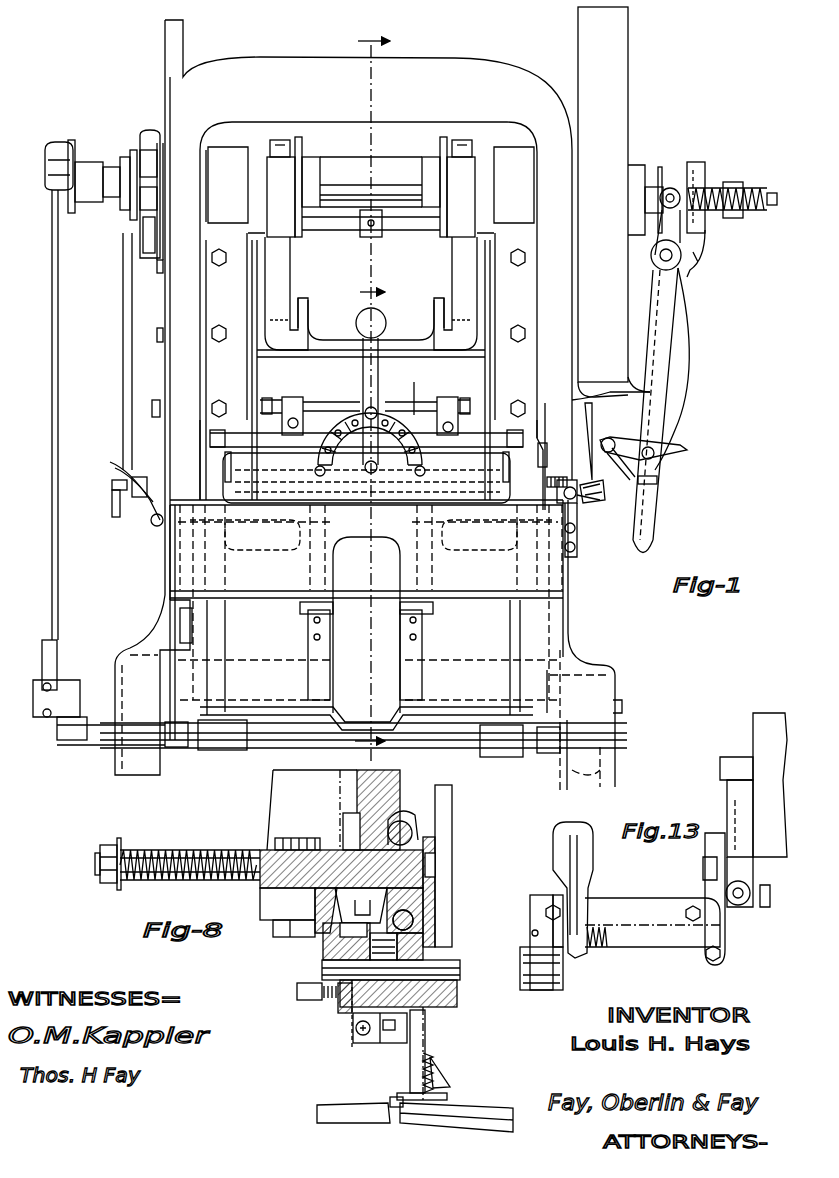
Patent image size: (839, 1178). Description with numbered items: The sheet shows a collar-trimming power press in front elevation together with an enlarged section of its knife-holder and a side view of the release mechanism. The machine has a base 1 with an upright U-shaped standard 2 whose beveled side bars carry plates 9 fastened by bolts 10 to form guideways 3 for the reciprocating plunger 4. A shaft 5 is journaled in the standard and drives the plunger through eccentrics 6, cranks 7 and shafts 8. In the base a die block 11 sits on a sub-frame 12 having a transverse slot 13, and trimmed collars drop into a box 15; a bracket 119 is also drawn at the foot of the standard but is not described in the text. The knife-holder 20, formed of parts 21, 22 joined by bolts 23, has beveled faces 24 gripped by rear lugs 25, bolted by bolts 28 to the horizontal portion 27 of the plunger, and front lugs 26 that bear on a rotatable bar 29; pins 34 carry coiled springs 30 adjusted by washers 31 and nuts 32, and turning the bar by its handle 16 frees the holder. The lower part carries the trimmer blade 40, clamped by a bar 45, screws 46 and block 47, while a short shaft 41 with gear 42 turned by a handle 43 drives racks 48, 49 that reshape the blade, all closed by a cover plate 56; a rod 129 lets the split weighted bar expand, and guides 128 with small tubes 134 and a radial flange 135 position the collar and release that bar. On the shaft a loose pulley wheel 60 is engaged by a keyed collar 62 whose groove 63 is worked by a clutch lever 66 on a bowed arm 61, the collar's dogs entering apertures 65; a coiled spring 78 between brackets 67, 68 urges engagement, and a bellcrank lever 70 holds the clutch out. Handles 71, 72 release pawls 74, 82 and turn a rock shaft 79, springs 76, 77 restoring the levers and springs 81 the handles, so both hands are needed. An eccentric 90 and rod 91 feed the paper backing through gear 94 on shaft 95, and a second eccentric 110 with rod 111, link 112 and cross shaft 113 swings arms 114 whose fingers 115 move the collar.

In FIG. 1, the base 1 is at (577, 656).
In FIG. 1, the upright U-shaped standard 2 is at (336, 73).
In FIG. 1, the guideways 3 is at (247, 372).
In FIG. 1, the plunger 4 is at (356, 393).
In FIG. 8, the plunger 4 is at (372, 788).
In FIG. 1, the shaft 5 is at (103, 165).
In FIG. 1, the eccentrics 6 is at (297, 148).
In FIG. 1, the cranks 7 is at (277, 272).
In FIG. 1, the shafts 8 is at (305, 313).
In FIG. 1, the plates 9 is at (468, 393).
In FIG. 1, the bolts 10 is at (214, 405).
In FIG. 8, the die block 11 is at (334, 1108).
In FIG. 8, the sub-frame 12 is at (470, 1115).
In FIG. 8, the slot 13 is at (392, 1100).
In FIG. 1, the box 15 is at (273, 598).
In FIG. 1, the handle 16 is at (415, 382).
In FIG. 8, the knife-holder 20 is at (335, 935).
In FIG. 8, the upper part of knife-holder 21 is at (340, 945).
In FIG. 8, the lower part of knife-holder 22 is at (311, 989).
In FIG. 8, the bolts 23 is at (361, 905).
In FIG. 8, the beveled faces 24 is at (320, 905).
In FIG. 8, the rear retaining lugs 25 is at (260, 898).
In FIG. 1, the front retaining lugs 26 is at (295, 402).
In FIG. 8, the horizontal portion of plunger 27 is at (300, 860).
In FIG. 8, the bolts 28 is at (325, 930).
In FIG. 1, the rotatably mounted bar 29 is at (389, 400).
In FIG. 8, the rotatably mounted bar 29 is at (410, 828).
In FIG. 8, the coiled springs 30 is at (183, 855).
In FIG. 8, the washers 31 is at (121, 842).
In FIG. 8, the nuts 32 is at (108, 845).
In FIG. 8, the pins 34 is at (95, 863).
In FIG. 1, the trimmer blade 40 is at (585, 470).
In FIG. 8, the trimmer blade 40 is at (352, 1030).
In FIG. 8, the short shaft 41 is at (455, 985).
In FIG. 8, the gear 42 is at (432, 947).
In FIG. 8, the handle 43 is at (452, 872).
In FIG. 8, the bar 45 is at (338, 1000).
In FIG. 8, the screws 46 is at (300, 996).
In FIG. 8, the block 47 is at (410, 1015).
In FIG. 8, the rack 48 is at (420, 928).
In FIG. 8, the rack 49 is at (400, 1010).
In FIG. 8, the cover plate 56 is at (392, 1030).
In FIG. 1, the pulley wheel 60 is at (623, 91).
In FIG. 1, the bowed arm 61 is at (683, 366).
In FIG. 1, the collar 62 is at (680, 160).
In FIG. 1, the circumferential groove 63 is at (666, 160).
In FIG. 1, the apertures 65 is at (676, 192).
In FIG. 1, the clutch lever 66 is at (663, 327).
In FIG. 1, the bracket 67 is at (695, 188).
In FIG. 1, the bracket 68 is at (773, 193).
In FIG. 1, the bellcrank lever 70 is at (657, 451).
In FIG. 1, the handle 71 is at (110, 465).
In FIG. 1, the handle 72 is at (620, 473).
In FIG. 13, the handle 72 is at (590, 860).
In FIG. 13, the small pawl 74 is at (528, 980).
In FIG. 1, the spring 76 is at (600, 500).
In FIG. 1, the spring 77 is at (556, 477).
In FIG. 1, the coiled spring 78 is at (752, 212).
In FIG. 1, the rock shaft 79 is at (578, 535).
In FIG. 13, the rock shaft 79 is at (642, 932).
In FIG. 13, the springs 81 is at (605, 927).
In FIG. 13, the pawl 82 is at (560, 990).
In FIG. 1, the eccentric 90 is at (127, 203).
In FIG. 1, the rod 91 is at (123, 345).
In FIG. 1, the gear 94 is at (140, 477).
In FIG. 1, the shaft 95 is at (112, 510).
In FIG. 1, the second eccentric 110 is at (75, 152).
In FIG. 1, the rod 111 is at (52, 412).
In FIG. 1, the link 112 is at (78, 692).
In FIG. 1, the cross shaft 113 is at (100, 735).
In FIG. 1, the arms 114 is at (215, 625).
In FIG. 1, the fingers 115 is at (370, 600).
In FIG. 1, the bracket 119 is at (180, 620).
In FIG. 8, the guides 128 is at (437, 1097).
In FIG. 8, the rod 129 is at (360, 1035).
In FIG. 8, the tubes 134 is at (427, 1047).
In FIG. 8, the radial flange 135 is at (450, 1080).